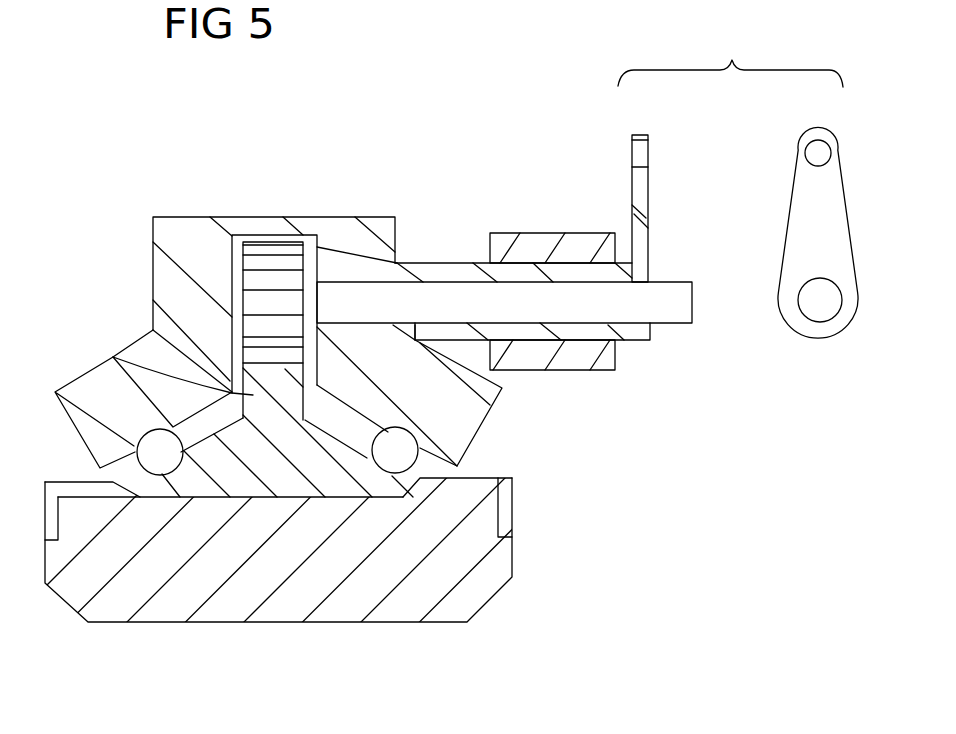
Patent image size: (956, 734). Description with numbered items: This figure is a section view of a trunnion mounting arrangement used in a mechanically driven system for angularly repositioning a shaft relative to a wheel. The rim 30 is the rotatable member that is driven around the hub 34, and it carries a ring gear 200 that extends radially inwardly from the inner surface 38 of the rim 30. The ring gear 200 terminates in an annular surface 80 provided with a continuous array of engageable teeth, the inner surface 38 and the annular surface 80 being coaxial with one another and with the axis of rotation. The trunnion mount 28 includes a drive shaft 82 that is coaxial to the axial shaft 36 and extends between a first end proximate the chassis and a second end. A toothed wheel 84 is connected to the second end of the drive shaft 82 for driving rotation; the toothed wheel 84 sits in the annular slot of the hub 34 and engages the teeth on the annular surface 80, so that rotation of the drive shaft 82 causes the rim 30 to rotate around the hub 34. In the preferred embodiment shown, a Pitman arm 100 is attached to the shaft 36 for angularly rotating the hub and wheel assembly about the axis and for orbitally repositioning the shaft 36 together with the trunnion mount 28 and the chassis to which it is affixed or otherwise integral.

The hub 34 is at (272, 194).
The toothed wheel 84 is at (240, 250).
The annular surface 80 is at (153, 329).
The ring gear 200 is at (113, 357).
The drive shaft 82 is at (675, 282).
The axial shaft 36 is at (458, 262).
The trunnion mount 28 is at (548, 233).
The Pitman arm 100 is at (640, 135).
The inner surface 38 is at (483, 485).
The rim 30 is at (545, 503).